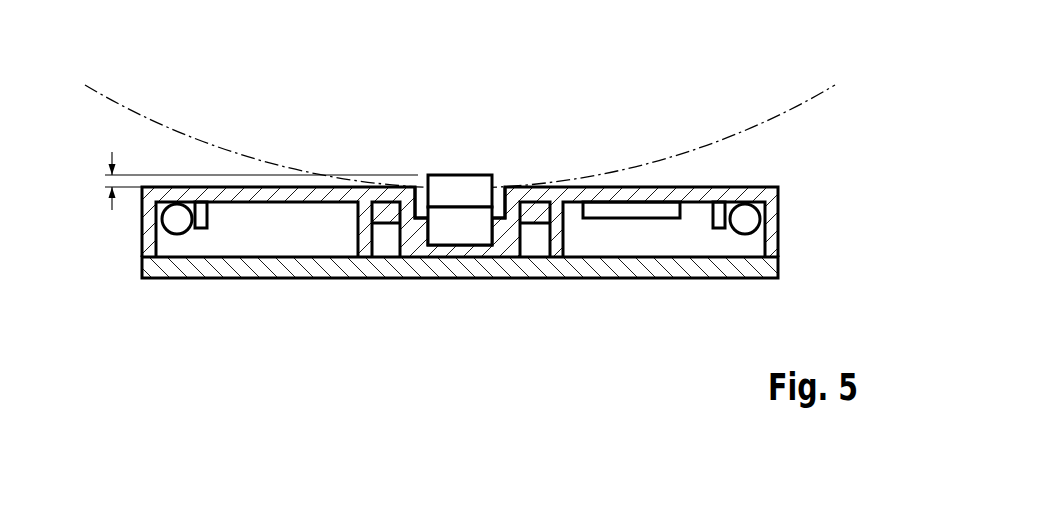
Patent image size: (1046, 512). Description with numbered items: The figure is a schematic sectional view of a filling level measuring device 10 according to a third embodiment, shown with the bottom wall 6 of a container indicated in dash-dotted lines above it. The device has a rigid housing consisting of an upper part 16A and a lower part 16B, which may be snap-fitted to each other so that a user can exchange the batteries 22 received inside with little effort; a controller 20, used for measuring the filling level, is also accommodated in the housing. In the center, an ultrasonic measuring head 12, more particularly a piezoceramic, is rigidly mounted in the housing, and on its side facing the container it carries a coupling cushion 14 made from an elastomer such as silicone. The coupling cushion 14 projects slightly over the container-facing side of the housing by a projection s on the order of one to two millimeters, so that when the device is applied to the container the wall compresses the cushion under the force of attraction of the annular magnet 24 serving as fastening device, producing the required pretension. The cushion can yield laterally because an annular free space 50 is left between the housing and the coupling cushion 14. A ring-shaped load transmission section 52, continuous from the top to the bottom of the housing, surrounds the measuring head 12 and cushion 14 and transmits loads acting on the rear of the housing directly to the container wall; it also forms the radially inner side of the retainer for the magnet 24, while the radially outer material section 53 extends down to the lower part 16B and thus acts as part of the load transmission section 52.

The bottom wall of a container 6 is at (748, 127).
The filling level measuring device 10 is at (252, 330).
The ultrasonic measuring head 12 is at (455, 233).
The coupling cushion 14 is at (458, 182).
The upper part 16A is at (772, 222).
The lower part 16B is at (772, 265).
The controller 20 is at (623, 205).
The batteries 22 is at (177, 222).
The annular magnet 24 is at (385, 213).
The annular free space 50 is at (500, 200).
The load transmission section 52 is at (408, 208).
The material section 53 is at (362, 234).
The projection s is at (108, 180).